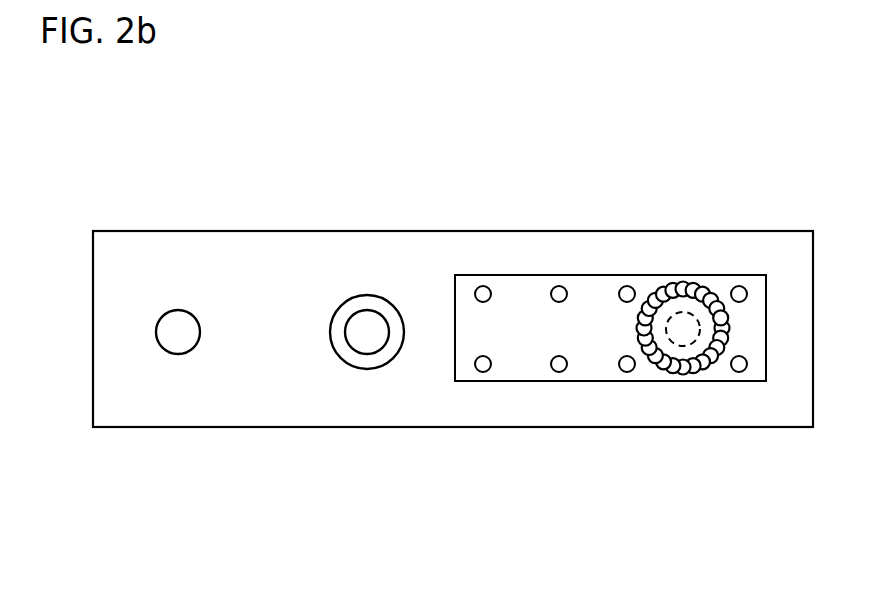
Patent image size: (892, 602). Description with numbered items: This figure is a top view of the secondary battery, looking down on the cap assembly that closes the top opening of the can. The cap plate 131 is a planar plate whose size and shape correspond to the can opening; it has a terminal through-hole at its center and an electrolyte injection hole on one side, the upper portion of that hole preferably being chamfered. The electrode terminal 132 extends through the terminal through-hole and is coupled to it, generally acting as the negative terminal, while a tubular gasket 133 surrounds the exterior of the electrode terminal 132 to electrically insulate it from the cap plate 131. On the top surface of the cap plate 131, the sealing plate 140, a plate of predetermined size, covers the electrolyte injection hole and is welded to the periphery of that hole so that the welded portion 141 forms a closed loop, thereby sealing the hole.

The cap plate 131 is at (273, 253).
The electrode terminal 132 is at (370, 328).
The tubular gasket 133 is at (357, 362).
The sealing plate 140 is at (522, 287).
The welded portion 141 is at (668, 366).